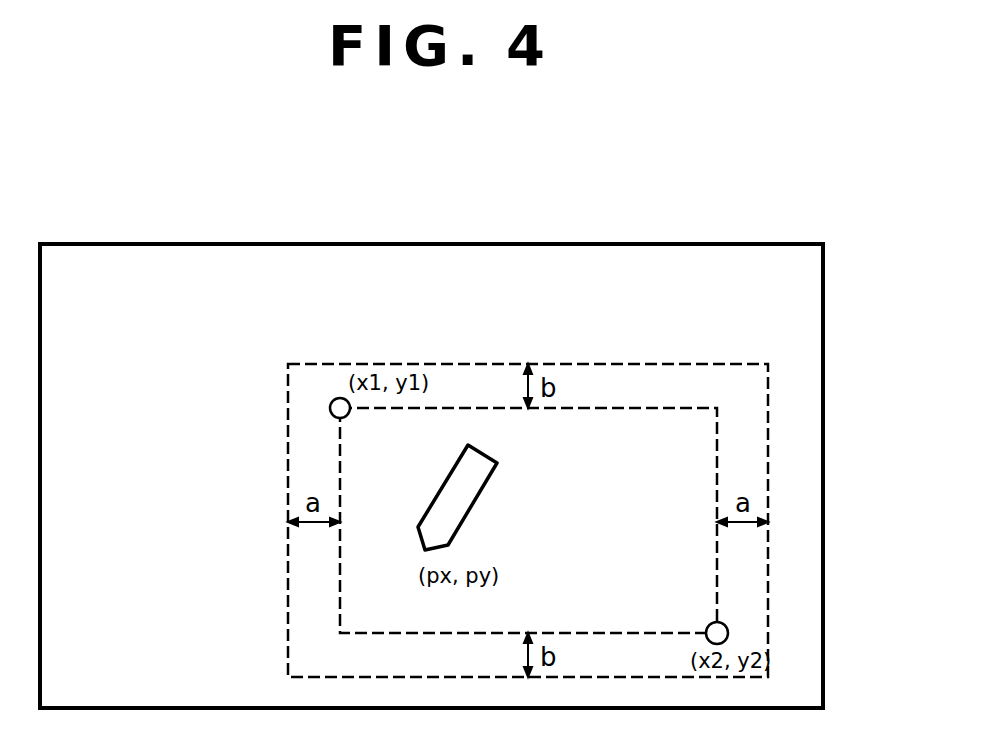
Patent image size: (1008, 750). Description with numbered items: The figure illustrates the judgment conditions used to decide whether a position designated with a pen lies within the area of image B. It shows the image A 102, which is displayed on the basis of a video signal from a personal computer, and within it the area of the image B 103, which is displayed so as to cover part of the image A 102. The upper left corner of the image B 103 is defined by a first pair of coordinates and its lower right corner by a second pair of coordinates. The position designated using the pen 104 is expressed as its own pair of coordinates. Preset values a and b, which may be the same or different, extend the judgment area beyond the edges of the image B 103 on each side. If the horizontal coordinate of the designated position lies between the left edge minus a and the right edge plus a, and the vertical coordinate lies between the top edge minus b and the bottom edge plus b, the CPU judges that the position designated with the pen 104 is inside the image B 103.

The image A 102 is at (653, 265).
The image B 103 is at (705, 462).
The input pen 104 is at (462, 501).